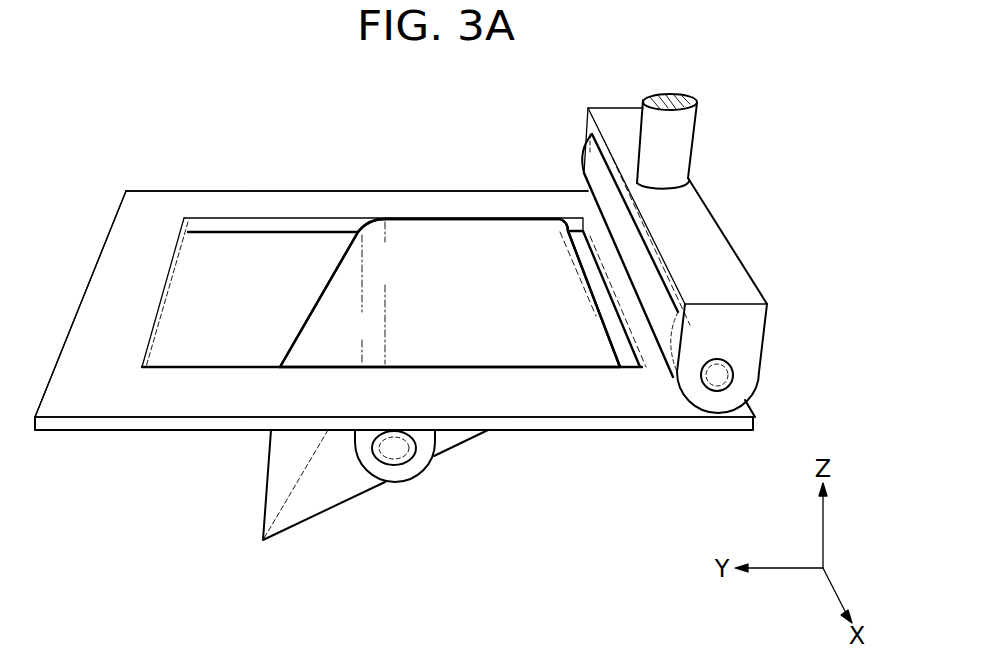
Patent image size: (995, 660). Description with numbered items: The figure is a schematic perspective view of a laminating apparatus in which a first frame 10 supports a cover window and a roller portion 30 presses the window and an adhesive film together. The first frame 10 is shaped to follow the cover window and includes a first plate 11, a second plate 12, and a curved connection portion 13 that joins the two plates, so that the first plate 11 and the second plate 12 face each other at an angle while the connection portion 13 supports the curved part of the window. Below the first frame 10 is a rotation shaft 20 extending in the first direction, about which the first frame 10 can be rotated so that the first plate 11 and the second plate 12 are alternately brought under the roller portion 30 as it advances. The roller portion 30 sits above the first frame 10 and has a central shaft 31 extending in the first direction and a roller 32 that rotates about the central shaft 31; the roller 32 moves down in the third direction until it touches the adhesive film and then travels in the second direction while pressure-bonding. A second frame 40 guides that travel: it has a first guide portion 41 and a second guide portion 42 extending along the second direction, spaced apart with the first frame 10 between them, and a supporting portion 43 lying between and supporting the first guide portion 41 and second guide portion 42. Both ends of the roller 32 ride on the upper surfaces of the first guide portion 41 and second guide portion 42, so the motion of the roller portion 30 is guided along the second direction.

The first frame 10 is at (450, 245).
The first plate 11 is at (452, 238).
The second plate 12 is at (330, 313).
The connection portion 13 is at (373, 240).
The rotation shaft 20 is at (397, 450).
The roller portion 30 is at (699, 255).
The central shaft 31 is at (722, 376).
The roller 32 is at (655, 302).
The second frame 40 is at (611, 432).
The first guide portion 41 is at (185, 407).
The second guide portion 42 is at (232, 202).
The supporting portion 43 is at (93, 302).